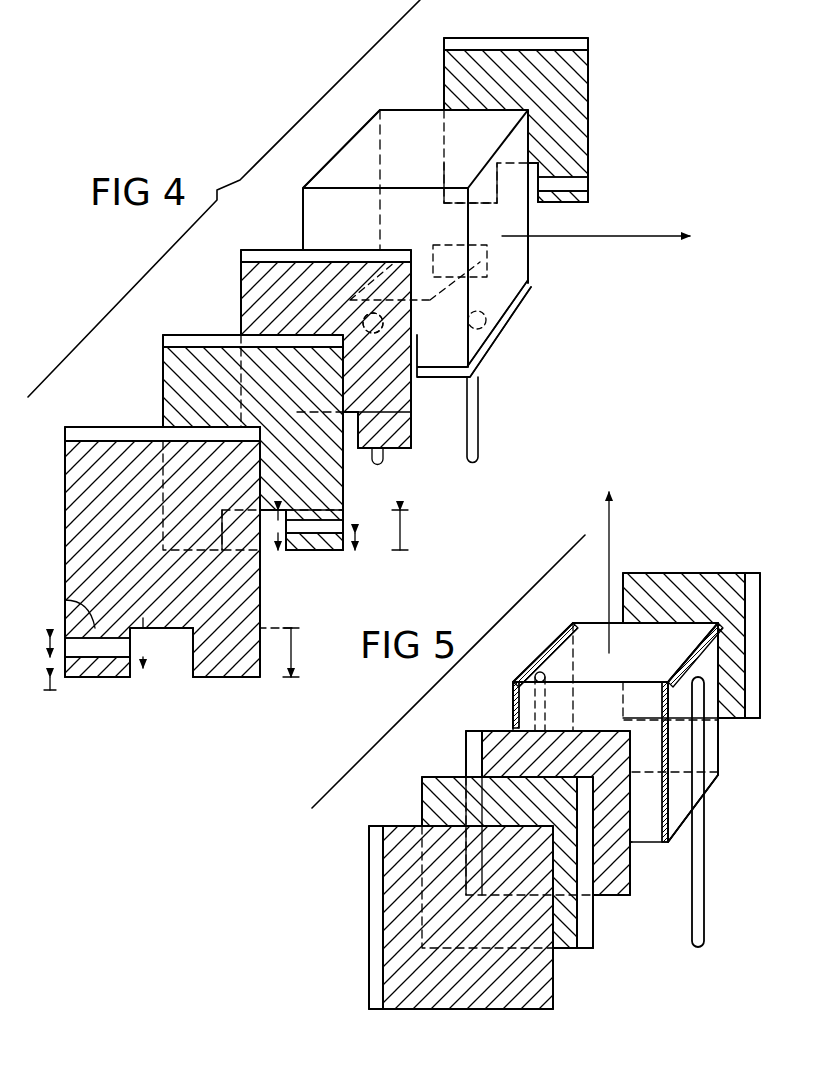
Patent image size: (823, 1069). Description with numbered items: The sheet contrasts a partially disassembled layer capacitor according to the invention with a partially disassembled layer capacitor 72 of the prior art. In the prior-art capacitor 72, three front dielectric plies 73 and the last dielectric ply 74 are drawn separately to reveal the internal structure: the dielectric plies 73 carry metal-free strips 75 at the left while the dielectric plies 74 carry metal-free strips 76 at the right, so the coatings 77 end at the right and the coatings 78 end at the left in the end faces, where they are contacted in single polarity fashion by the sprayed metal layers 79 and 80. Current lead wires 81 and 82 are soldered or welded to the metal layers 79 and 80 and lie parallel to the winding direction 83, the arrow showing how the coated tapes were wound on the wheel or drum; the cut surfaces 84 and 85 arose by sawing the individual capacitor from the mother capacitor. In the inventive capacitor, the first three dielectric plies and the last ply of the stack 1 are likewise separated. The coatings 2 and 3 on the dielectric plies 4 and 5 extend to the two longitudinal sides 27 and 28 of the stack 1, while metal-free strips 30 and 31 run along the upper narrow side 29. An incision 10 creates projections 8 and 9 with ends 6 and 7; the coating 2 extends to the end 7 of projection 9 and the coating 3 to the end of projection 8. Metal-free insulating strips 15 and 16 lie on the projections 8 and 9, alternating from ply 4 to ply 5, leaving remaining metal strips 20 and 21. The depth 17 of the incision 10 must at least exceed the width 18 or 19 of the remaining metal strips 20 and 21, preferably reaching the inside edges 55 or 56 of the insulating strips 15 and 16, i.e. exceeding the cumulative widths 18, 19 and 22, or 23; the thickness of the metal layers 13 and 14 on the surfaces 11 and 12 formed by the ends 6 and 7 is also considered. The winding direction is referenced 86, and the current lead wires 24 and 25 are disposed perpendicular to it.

In FIG. 4, the stack 1 is at (362, 142).
In FIG. 4, the coating 2 is at (241, 305).
In FIG. 4, the coating 3 is at (570, 105).
In FIG. 4, the dielectric ply 4 is at (241, 270).
In FIG. 4, the dielectric ply 5 is at (444, 68).
In FIG. 4, the end of projection 6 is at (465, 205).
In FIG. 4, the end of projection 7 is at (575, 205).
In FIG. 4, the projection 8 is at (225, 550).
In FIG. 4, the projection 9 is at (280, 550).
In FIG. 4, the incision 10 is at (530, 200).
In FIG. 4, the surface 11 is at (372, 305).
In FIG. 4, the surface 12 is at (510, 305).
In FIG. 4, the metal layer 13 is at (345, 372).
In FIG. 4, the metal layer 14 is at (505, 325).
In FIG. 4, the metal-free insulating strip 15 is at (290, 412).
In FIG. 4, the metal-free insulating strip 16 is at (580, 184).
In FIG. 4, the depth of incision 17 is at (400, 530).
In FIG. 4, the width of remaining metal strip 18 is at (50, 688).
In FIG. 4, the width of remaining metal strip 19 is at (356, 552).
In FIG. 4, the remaining metal strip 20 is at (100, 680).
In FIG. 4, the remaining metal strip 21 is at (585, 200).
In FIG. 4, the width of metal-free insulating strip 22 is at (146, 648).
In FIG. 4, the width of metal-free insulating strip 23 is at (279, 514).
In FIG. 4, the current lead wire 24 is at (385, 428).
In FIG. 4, the current lead wire 25 is at (478, 432).
In FIG. 4, the longitudinal side 27 is at (345, 172).
In FIG. 4, the longitudinal side 28 is at (515, 232).
In FIG. 4, the narrow side 29 is at (417, 135).
In FIG. 4, the metal-free strip 30 is at (292, 255).
In FIG. 4, the metal-free strip 31 is at (512, 44).
In FIG. 4, the inside edge 55 is at (65, 602).
In FIG. 4, the inside edge 56 is at (335, 500).
In FIG. 4, the winding direction 86 is at (655, 238).
In FIG. 5, the layer capacitor 72 is at (718, 758).
In FIG. 5, the dielectric ply 73 is at (620, 897).
In FIG. 5, the dielectric ply 74 is at (728, 722).
In FIG. 5, the metal-free strip 75 is at (470, 750).
In FIG. 5, the metal-free strip 76 is at (738, 580).
In FIG. 5, the coating 77 is at (625, 865).
In FIG. 5, the coating 78 is at (665, 575).
In FIG. 5, the sprayed metal layer 79 is at (670, 825).
In FIG. 5, the sprayed metal layer 80 is at (513, 695).
In FIG. 5, the current lead wire 81 is at (704, 888).
In FIG. 5, the current lead wire 82 is at (535, 672).
In FIG. 5, the winding direction 83 is at (612, 510).
In FIG. 5, the cut surface 84 is at (590, 630).
In FIG. 5, the cut surface 85 is at (700, 798).